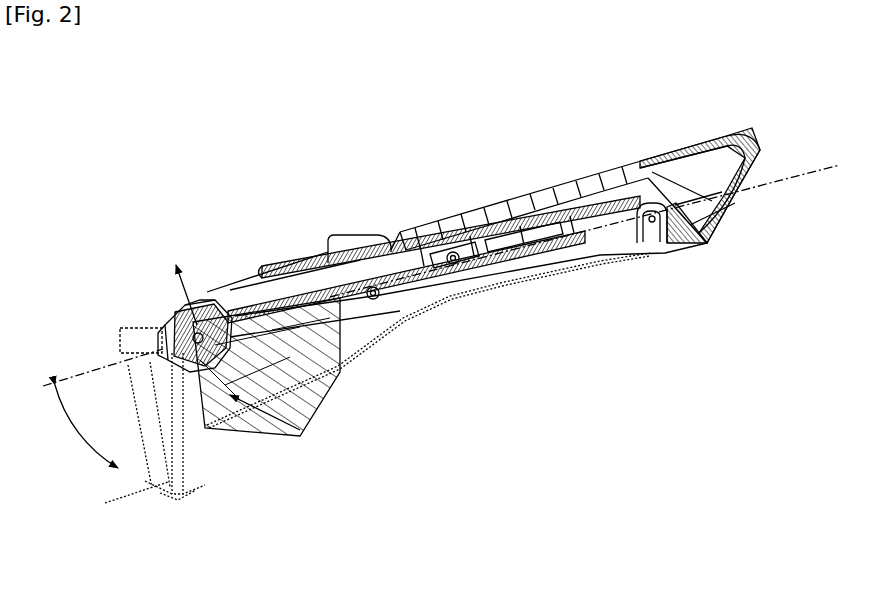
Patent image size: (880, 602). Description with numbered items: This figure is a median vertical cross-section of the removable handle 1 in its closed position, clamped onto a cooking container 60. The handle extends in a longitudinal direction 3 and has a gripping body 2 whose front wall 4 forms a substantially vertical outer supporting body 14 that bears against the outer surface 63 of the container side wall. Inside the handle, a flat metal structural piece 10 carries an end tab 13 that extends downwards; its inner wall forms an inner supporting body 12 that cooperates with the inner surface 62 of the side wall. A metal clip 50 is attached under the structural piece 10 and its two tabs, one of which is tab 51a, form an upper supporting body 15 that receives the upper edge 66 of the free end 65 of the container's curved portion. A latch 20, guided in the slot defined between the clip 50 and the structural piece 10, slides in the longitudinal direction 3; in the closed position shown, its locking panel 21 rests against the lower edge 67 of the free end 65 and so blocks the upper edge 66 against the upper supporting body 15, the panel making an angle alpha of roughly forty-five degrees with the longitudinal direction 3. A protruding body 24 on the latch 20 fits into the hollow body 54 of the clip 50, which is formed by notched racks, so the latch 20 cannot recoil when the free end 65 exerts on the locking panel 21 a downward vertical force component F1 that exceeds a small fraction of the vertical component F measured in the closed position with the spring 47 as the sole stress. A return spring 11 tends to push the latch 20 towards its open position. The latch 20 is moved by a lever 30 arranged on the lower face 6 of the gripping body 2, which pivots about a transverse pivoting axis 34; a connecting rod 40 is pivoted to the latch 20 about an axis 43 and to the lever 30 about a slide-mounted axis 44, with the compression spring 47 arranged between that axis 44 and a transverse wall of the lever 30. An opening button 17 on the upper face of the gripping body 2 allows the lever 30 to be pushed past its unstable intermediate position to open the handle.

The removable handle 1 is at (139, 158).
The gripping body 2 is at (541, 190).
The longitudinal direction 3 is at (803, 173).
The front wall 4 is at (190, 425).
The lower face 6 is at (683, 243).
The structural piece 10 is at (238, 322).
The spring 11 is at (293, 260).
The inner supporting body 12 is at (238, 412).
The end tab 13 is at (158, 340).
The outer supporting body 14 is at (205, 431).
The upper supporting body 15 is at (193, 323).
The opening button 17 is at (371, 235).
The latch 20 is at (222, 325).
The locking panel 21 is at (243, 383).
The protruding body 24 is at (211, 330).
The lever 30 is at (540, 250).
The pivoting axis 34 is at (657, 243).
The connecting rod 40 is at (410, 290).
The axis 43 is at (380, 296).
The axis 44 is at (460, 262).
The spring 47 is at (503, 200).
The clip 50 is at (272, 330).
The tab 51a is at (200, 320).
The hollow body 54 is at (257, 352).
The cooking container 60 is at (163, 392).
The inner surface 62 is at (170, 483).
The outer surface 63 is at (200, 498).
The free end 65 is at (172, 322).
The upper edge 66 is at (205, 330).
The lower edge 67 is at (260, 393).
The vertical component F is at (195, 325).
The vertical component F1 is at (300, 430).